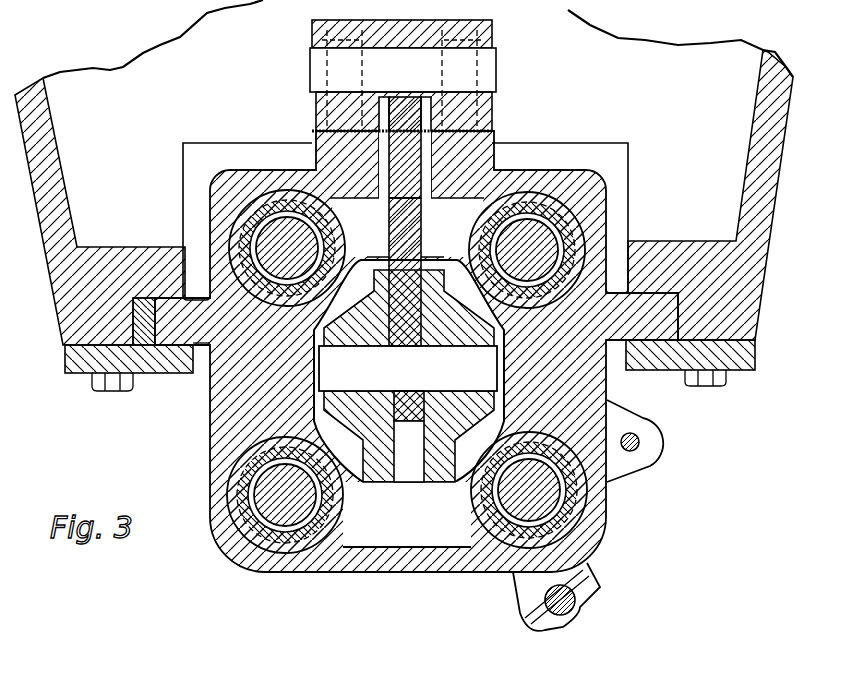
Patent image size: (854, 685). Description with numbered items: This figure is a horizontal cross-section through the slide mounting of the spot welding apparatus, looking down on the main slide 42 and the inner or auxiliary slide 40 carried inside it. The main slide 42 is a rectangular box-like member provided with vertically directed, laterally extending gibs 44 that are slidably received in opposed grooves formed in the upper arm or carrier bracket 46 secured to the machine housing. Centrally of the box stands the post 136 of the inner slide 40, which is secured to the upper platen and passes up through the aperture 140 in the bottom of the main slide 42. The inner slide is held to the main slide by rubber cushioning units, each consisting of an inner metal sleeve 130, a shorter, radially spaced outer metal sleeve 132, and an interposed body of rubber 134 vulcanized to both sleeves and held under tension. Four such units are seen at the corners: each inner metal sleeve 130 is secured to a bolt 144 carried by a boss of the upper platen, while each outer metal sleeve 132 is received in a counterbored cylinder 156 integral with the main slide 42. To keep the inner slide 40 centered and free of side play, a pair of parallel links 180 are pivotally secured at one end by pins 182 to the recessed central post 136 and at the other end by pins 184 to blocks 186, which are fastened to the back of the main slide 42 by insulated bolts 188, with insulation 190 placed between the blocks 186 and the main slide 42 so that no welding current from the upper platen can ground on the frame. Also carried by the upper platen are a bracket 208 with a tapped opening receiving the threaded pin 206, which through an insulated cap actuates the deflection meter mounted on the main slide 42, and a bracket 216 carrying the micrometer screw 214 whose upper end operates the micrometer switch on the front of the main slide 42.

The inner or auxiliary slide 40 is at (324, 344).
The main slide 42 is at (210, 411).
The gibs 44 is at (183, 300).
The upper arm or carrier bracket 46 is at (768, 78).
The inner metal sleeve 130 is at (327, 515).
The outer metal sleeve 132 is at (262, 452).
The body of rubber 134 is at (323, 505).
The post 136 is at (466, 470).
The aperture 140 is at (501, 409).
The bolts 144 is at (548, 504).
The cylinder 156 is at (480, 508).
The links 180 is at (418, 235).
The pins 182 is at (480, 370).
The pins 184 is at (487, 72).
The blocks 186 is at (494, 110).
The insulated bolts 188 is at (466, 65).
The insulation 190 is at (487, 130).
The pin 206 is at (636, 436).
The bracket 208 is at (640, 452).
The micrometer screw 214 is at (590, 567).
The bracket 216 is at (522, 590).